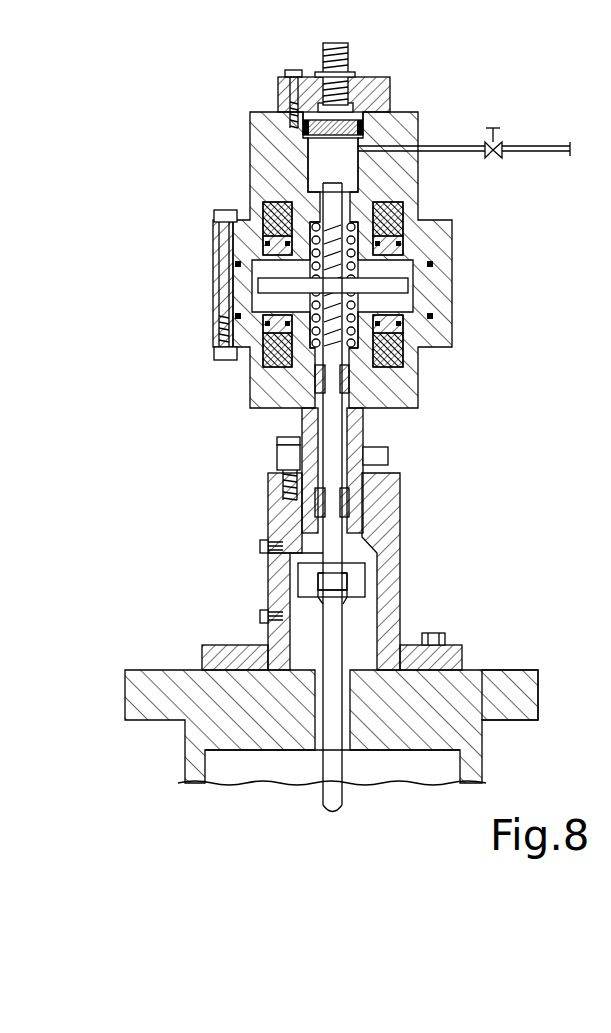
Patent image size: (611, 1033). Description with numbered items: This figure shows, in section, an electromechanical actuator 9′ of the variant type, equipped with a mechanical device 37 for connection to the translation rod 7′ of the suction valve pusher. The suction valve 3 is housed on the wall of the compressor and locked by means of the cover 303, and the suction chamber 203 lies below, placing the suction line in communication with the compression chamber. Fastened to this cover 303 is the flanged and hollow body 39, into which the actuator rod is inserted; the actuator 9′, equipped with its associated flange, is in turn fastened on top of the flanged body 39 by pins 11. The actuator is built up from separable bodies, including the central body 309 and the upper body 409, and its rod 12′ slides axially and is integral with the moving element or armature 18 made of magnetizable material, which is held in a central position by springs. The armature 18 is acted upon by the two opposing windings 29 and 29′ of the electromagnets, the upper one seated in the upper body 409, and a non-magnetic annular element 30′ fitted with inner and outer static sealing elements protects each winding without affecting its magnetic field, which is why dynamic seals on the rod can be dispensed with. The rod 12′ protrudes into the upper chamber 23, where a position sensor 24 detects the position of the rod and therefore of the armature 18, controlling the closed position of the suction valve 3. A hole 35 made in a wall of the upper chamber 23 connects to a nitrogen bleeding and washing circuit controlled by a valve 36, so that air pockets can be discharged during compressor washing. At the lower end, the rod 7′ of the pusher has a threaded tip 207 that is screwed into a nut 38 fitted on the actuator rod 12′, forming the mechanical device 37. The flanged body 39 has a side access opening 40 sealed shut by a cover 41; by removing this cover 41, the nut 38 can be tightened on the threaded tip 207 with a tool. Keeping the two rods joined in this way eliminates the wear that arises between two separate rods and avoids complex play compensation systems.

The suction valve 3 is at (124, 689).
The translation rod of the pusher 7′ is at (333, 768).
The electromechanical actuator 9′ is at (407, 430).
The pins 11 is at (300, 445).
The rod of the actuator 12′ is at (333, 450).
The moving element or armature 18 is at (398, 287).
The upper chamber 23 is at (323, 157).
The position sensor 24 is at (347, 50).
The winding of an electromagnet 29 is at (403, 355).
The winding of an electromagnet 29′ is at (393, 205).
The non-magnetic annular element 30′ is at (266, 241).
The hole 35 is at (387, 147).
The valve 36 is at (498, 145).
The mechanical device 37 is at (366, 580).
The nut 38 is at (305, 580).
The flanged and hollow body 39 is at (217, 660).
The access opening 40 is at (288, 553).
The cover 41 is at (277, 588).
The suction chamber 203 is at (250, 772).
The threaded tip 207 is at (335, 588).
The cover 303 is at (508, 682).
The central body 309 is at (240, 290).
The upper body 409 is at (257, 162).